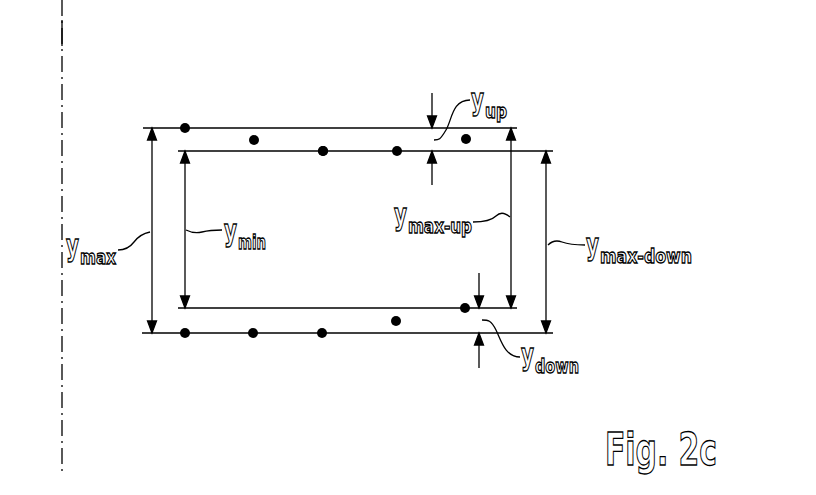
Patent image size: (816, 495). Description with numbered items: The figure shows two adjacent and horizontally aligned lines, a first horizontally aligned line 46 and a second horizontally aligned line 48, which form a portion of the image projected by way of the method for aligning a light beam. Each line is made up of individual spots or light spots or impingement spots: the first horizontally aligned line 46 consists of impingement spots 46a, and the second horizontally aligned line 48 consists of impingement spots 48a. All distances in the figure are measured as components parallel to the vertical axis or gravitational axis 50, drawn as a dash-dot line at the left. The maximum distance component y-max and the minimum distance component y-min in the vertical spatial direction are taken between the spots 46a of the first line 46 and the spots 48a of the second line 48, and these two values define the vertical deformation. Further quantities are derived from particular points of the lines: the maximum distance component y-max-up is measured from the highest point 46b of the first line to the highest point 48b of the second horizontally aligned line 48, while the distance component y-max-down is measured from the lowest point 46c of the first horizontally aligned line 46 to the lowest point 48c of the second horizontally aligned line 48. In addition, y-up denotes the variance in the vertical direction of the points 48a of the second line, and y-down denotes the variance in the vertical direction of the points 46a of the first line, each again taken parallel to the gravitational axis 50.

The vertical axis or gravitational axis 50 is at (62, 33).
The second horizontally aligned line 48 is at (550, 139).
The spots or light spots or impingement spots of second horizontally aligned line 48a is at (396, 149).
The highest point of second horizontally aligned line 48b is at (185, 126).
The lowest point of second horizontally aligned line 48c is at (323, 153).
The first horizontally aligned line 46 is at (558, 322).
The spots or light spots or impingement spots of first horizontally aligned line 46a is at (395, 323).
The highest point of first horizontally aligned line 46b is at (463, 306).
The lowest point of first horizontally aligned line 46c is at (185, 335).